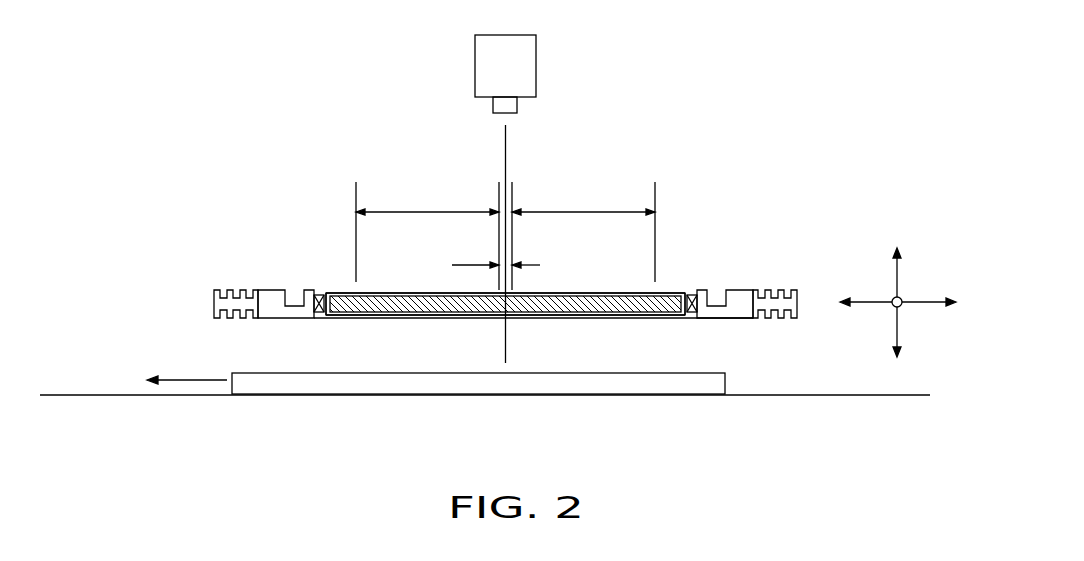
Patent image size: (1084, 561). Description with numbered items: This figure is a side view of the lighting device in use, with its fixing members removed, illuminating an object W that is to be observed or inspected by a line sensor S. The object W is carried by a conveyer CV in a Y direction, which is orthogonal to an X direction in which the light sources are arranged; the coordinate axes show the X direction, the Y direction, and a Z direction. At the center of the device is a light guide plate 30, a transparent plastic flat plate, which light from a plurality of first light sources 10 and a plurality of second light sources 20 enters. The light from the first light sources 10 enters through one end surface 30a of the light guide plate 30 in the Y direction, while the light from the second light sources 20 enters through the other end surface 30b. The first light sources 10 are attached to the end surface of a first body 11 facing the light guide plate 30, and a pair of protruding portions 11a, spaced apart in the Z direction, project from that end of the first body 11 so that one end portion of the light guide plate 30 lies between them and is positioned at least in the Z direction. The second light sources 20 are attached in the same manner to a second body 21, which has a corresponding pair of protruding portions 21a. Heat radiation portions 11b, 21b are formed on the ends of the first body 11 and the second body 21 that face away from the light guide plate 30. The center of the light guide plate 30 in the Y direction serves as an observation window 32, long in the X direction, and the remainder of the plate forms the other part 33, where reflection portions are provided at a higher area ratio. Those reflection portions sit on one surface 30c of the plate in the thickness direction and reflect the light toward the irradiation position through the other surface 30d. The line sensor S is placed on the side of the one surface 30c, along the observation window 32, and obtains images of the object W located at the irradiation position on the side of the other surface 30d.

The line sensor S is at (536, 65).
The first light sources 10 is at (693, 318).
The first body 11 is at (740, 290).
The protruding portions 11a is at (660, 293).
The heat radiation portion 11b is at (780, 290).
The second light sources 20 is at (312, 318).
The second body 21 is at (266, 290).
The protruding portions 21a is at (324, 295).
The heat radiation portion 21b is at (230, 290).
The light guide plate 30 is at (583, 293).
The end surface 30a is at (693, 295).
The end surface 30b is at (316, 292).
The one surface 30c is at (430, 293).
The other surface 30d is at (442, 315).
The observation window 32 is at (495, 236).
The other part 33 is at (505, 230).
The conveyer CV is at (88, 395).
The object W is at (728, 383).
The X direction X is at (907, 318).
The Y direction Y is at (885, 300).
The Z direction Z is at (897, 285).